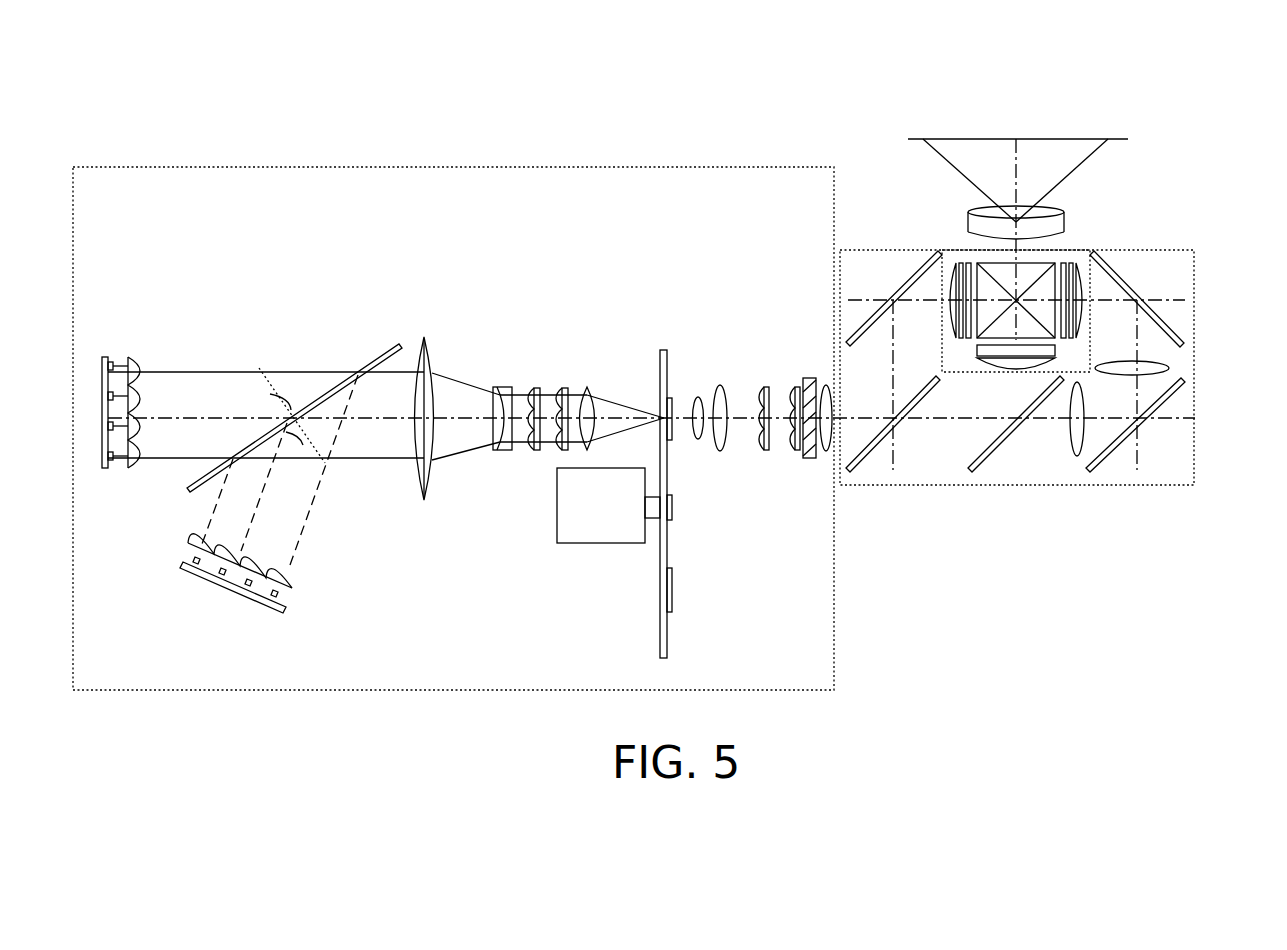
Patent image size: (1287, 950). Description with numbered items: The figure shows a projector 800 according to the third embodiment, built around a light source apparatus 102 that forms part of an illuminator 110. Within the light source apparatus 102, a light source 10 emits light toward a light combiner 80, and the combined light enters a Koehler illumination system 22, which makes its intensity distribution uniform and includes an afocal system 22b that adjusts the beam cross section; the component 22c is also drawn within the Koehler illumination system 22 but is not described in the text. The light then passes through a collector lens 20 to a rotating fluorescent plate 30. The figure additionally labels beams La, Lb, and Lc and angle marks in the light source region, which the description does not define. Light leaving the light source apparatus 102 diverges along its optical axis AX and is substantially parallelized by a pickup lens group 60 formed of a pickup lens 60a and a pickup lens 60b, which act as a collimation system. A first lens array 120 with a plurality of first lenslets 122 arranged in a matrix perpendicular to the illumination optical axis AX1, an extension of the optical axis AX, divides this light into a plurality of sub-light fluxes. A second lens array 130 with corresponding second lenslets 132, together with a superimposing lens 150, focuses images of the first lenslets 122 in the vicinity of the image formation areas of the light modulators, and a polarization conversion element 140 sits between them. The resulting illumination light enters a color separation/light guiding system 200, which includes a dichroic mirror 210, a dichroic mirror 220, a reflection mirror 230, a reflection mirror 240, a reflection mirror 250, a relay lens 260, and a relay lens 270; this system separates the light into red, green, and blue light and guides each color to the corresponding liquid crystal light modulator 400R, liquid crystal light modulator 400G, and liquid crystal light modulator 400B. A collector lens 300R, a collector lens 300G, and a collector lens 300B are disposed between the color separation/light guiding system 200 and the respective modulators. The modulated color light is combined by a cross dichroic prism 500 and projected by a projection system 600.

The projector 800 is at (1226, 49).
The illuminator 110 is at (148, 167).
The light source 10 is at (181, 354).
The light combiner 80 is at (358, 352).
The light source apparatus 102 is at (251, 280).
The Koehler illumination system 22 is at (470, 342).
The afocal system 22b is at (515, 510).
The lens arrays 22c is at (548, 380).
The collector lens 20 is at (592, 395).
The rotating fluorescent plate 30 is at (676, 539).
The pickup lens group 60 is at (717, 362).
The pickup lens 60a is at (698, 397).
The pickup lens 60b is at (728, 372).
The first lens array 120 is at (724, 413).
The first lenslets 122 is at (762, 428).
The second lens array 130 is at (769, 413).
The second lenslets 132 is at (794, 440).
The polarization conversion element 140 is at (810, 458).
The superimposing lens 150 is at (826, 385).
The color separation/light guiding system 200 is at (1193, 298).
The dichroic mirror 210 is at (865, 460).
The dichroic mirror 220 is at (985, 463).
The reflection mirror 230 is at (915, 268).
The reflection mirror 240 is at (1118, 448).
The reflection mirror 250 is at (1120, 273).
The relay lens 260 is at (1075, 437).
The relay lens 270 is at (1165, 365).
The collector lens 300R is at (960, 272).
The collector lens 300G is at (1003, 371).
The collector lens 300B is at (1072, 272).
The liquid crystal light modulator 400R is at (953, 263).
The liquid crystal light modulator 400G is at (1055, 352).
The liquid crystal light modulator 400B is at (1079, 263).
The cross dichroic prism 500 is at (1030, 270).
The projection system 600 is at (982, 212).
The light beam La is at (234, 371).
The light beam Lb is at (290, 548).
The light beam Lc is at (377, 457).
The optical axis AX is at (450, 418).
The illumination optical axis AX1 is at (678, 440).